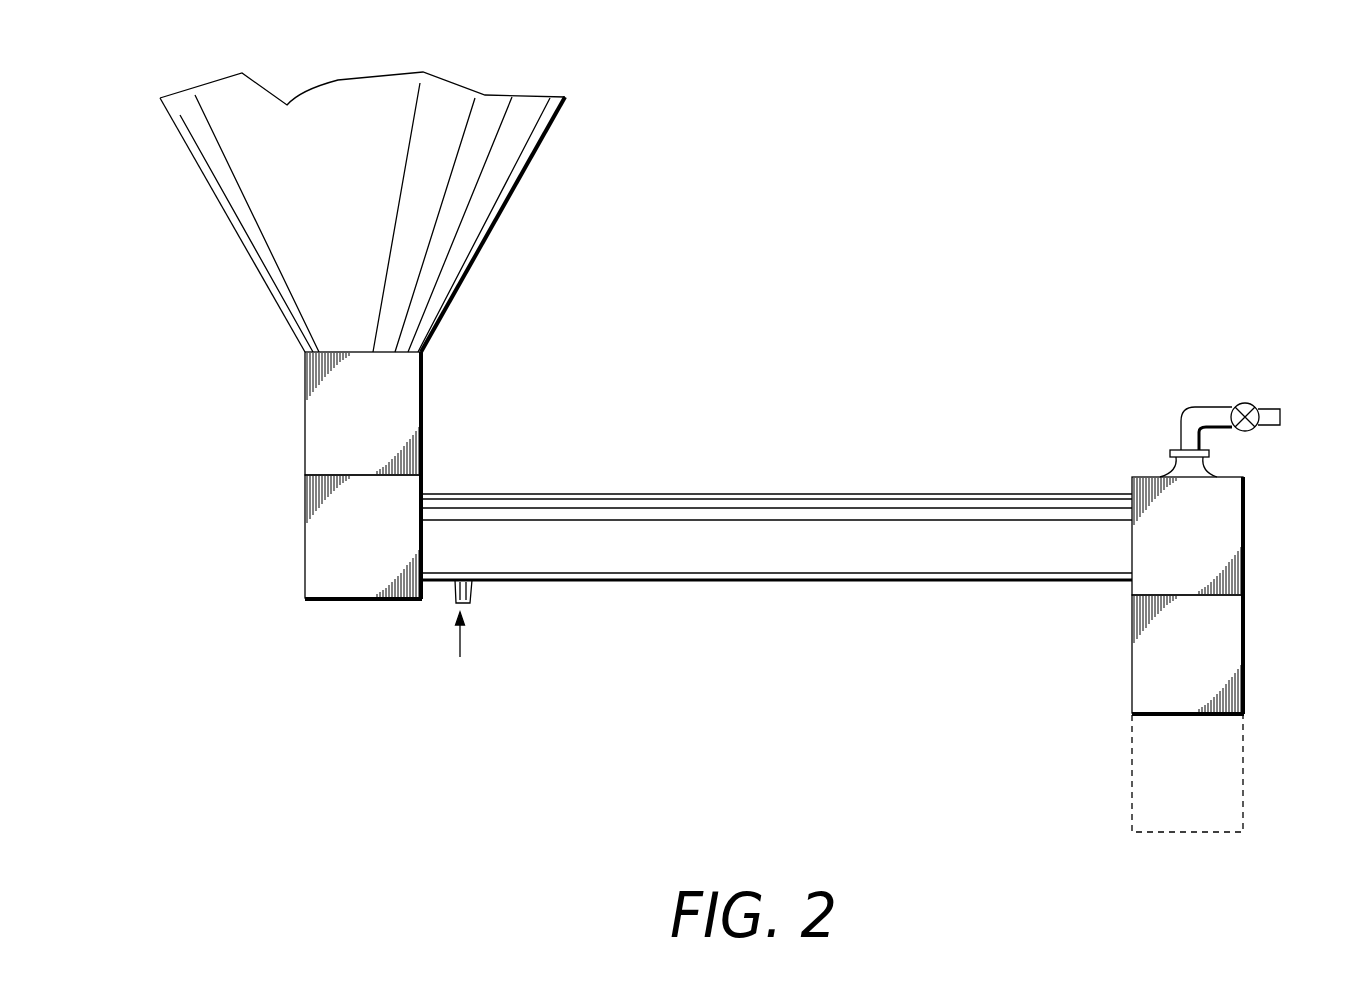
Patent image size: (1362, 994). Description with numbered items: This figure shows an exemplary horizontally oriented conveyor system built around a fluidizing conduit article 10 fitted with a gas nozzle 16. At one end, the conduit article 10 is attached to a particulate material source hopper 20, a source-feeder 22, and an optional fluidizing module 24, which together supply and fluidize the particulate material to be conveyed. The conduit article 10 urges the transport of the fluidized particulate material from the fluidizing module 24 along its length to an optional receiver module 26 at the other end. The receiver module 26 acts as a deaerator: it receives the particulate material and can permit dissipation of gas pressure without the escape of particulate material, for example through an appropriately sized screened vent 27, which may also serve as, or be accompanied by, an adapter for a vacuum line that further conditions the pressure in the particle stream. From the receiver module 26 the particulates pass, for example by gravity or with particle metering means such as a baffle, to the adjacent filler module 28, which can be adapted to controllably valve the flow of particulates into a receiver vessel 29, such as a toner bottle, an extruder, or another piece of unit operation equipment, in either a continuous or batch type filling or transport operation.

The fluidizing conduit article 10 is at (761, 475).
The gas nozzle 16 is at (479, 601).
The particulate material source hopper 20 is at (560, 180).
The source-feeder 22 is at (436, 417).
The fluidizing module 24 is at (287, 562).
The receiver module 26 is at (1258, 528).
The screened vent 27 is at (1272, 412).
The filler module 28 is at (1256, 668).
The receiver vessel 29 is at (1256, 783).